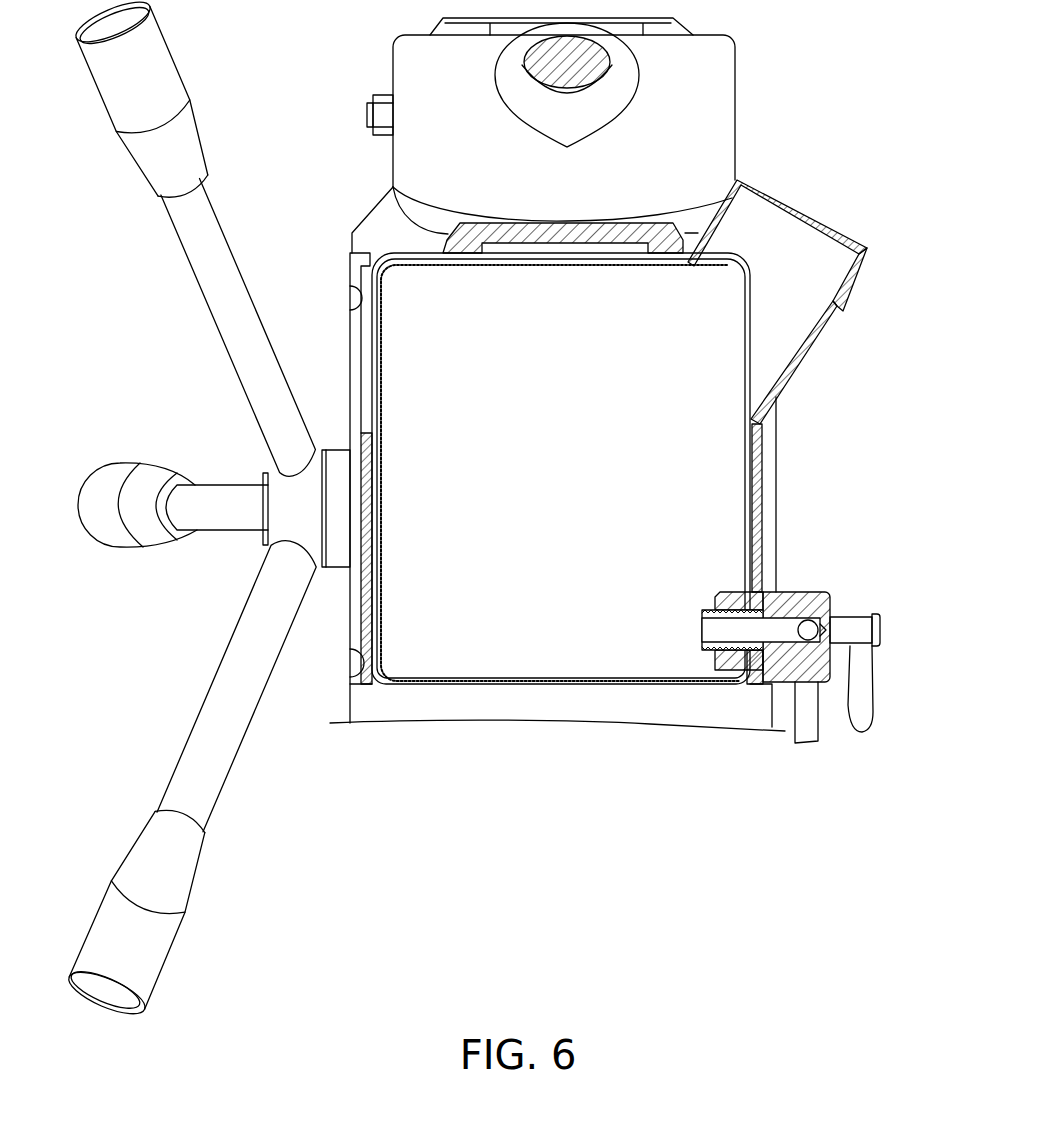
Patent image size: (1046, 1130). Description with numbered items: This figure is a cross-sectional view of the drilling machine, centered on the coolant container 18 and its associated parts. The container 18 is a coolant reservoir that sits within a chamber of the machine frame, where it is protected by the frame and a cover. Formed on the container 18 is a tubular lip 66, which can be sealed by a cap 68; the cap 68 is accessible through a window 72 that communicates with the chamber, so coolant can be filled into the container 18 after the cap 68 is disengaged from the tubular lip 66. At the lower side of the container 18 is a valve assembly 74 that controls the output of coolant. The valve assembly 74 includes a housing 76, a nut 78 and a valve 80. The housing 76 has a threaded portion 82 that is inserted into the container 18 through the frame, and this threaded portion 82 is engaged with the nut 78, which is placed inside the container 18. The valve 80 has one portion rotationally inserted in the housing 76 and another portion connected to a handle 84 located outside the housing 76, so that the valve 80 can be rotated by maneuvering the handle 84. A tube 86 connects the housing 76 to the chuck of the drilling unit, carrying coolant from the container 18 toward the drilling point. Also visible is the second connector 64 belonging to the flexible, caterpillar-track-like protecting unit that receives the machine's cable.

The container 18 is at (378, 375).
The second connector 64 is at (358, 627).
The tubular lip 66 is at (810, 350).
The cap 68 is at (861, 283).
The window 72 is at (762, 428).
The valve assembly 74 is at (764, 646).
The housing 76 is at (798, 603).
The nut 78 is at (730, 597).
The valve 80 is at (878, 632).
The threaded portion 82 is at (700, 617).
The handle 84 is at (866, 706).
The tube 86 is at (802, 732).